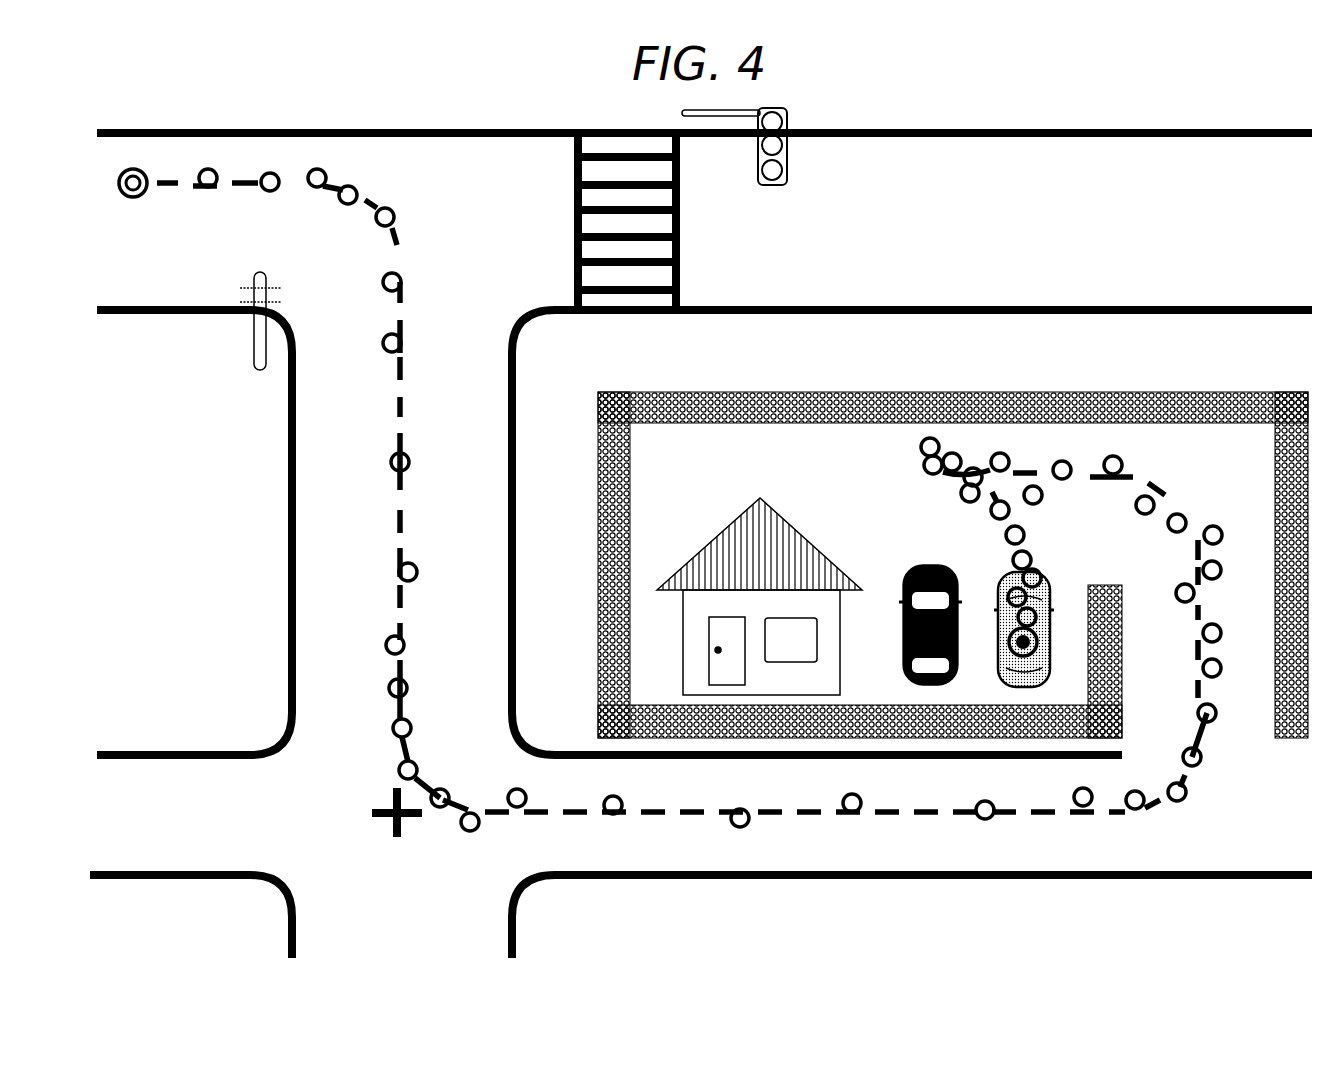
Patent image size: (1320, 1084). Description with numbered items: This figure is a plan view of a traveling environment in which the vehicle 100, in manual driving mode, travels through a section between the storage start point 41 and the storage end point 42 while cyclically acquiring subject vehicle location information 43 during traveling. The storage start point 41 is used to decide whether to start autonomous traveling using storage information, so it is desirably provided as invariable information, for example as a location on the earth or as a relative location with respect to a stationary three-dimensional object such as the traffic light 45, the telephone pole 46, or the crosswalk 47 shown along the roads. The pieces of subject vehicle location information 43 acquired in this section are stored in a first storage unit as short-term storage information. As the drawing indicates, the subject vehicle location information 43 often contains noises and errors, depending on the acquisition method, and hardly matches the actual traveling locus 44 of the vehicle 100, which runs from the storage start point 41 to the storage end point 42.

The storage start point 41 is at (145, 195).
The storage end point 42 is at (1043, 650).
The subject vehicle location information 43 is at (392, 212).
The actual traveling locus 44 is at (402, 408).
The traffic light 45 is at (787, 170).
The telephone pole 46 is at (265, 275).
The crosswalk 47 is at (680, 278).
The vehicle 100 is at (1003, 575).